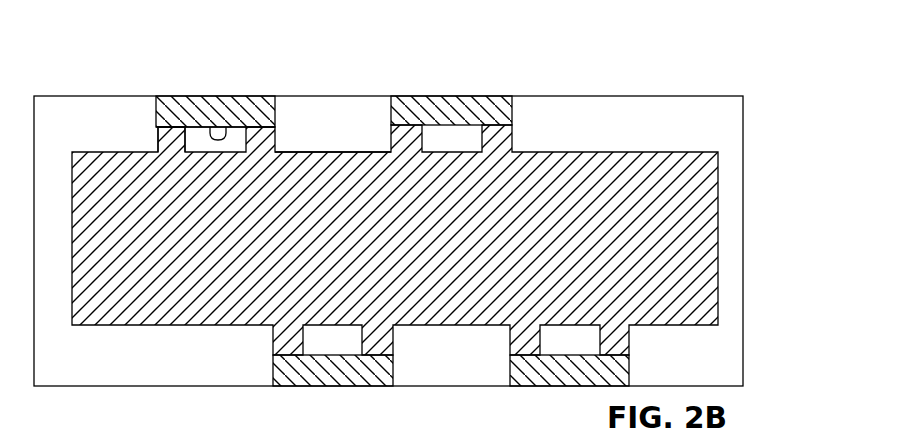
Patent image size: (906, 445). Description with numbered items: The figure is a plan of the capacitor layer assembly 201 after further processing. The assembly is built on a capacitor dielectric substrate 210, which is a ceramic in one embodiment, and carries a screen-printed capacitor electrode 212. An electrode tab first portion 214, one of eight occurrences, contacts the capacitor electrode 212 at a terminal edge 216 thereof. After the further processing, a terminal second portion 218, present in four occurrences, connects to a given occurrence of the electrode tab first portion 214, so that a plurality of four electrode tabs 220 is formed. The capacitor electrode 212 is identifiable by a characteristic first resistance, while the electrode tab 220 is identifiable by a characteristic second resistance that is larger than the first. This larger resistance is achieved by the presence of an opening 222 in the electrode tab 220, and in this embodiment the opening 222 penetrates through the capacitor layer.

The capacitor layer assembly 201 is at (775, 158).
The capacitor dielectric substrate 210 is at (665, 117).
The capacitor electrode 212 is at (317, 182).
The electrode tab first portion 214 is at (158, 146).
The terminal edge 216 is at (350, 152).
The terminal second portion 218 is at (205, 113).
The electrode tab 220 is at (155, 124).
The opening 222 is at (212, 127).